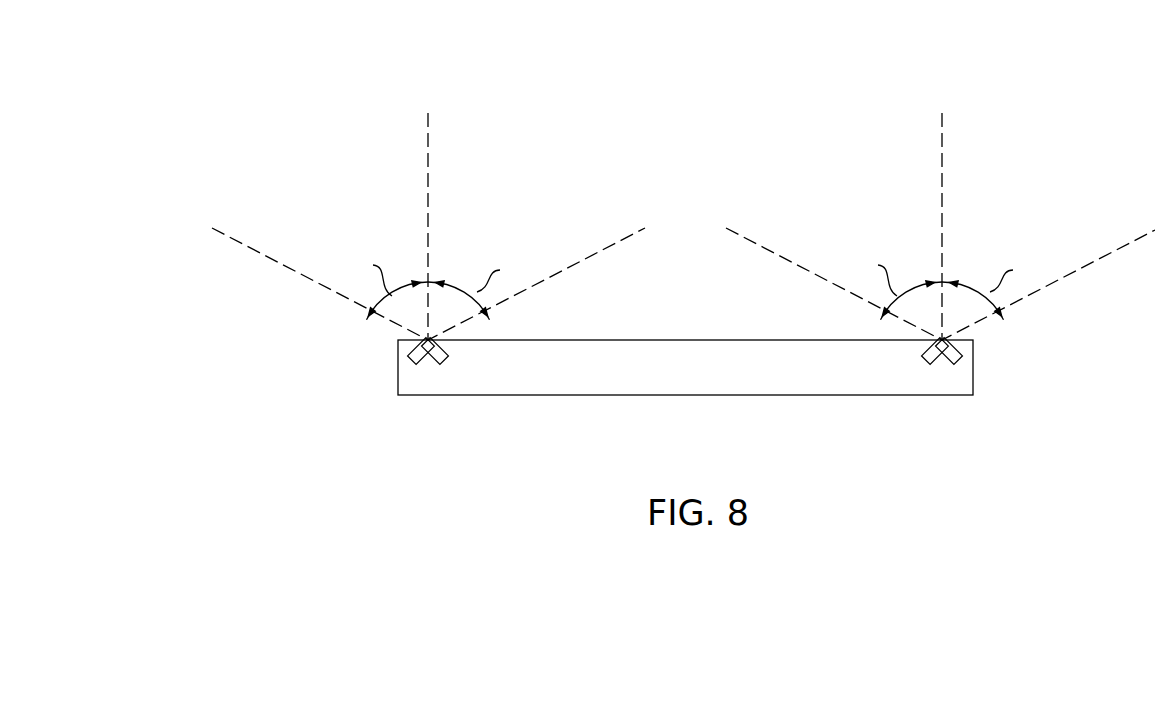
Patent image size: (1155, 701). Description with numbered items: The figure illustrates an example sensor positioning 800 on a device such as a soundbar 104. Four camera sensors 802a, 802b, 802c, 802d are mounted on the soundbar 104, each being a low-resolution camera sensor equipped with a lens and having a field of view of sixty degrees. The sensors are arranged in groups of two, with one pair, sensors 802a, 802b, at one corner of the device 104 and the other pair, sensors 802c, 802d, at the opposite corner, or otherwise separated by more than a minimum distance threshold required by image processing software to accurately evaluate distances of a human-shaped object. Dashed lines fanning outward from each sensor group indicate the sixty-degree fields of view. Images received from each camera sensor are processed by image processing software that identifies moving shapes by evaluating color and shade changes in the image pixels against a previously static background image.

The sensor positioning 800 is at (316, 61).
The soundbar 104 is at (793, 395).
The camera sensor 802a is at (411, 359).
The camera sensor 802b is at (440, 366).
The camera sensor 802c is at (930, 364).
The camera sensor 802d is at (960, 362).